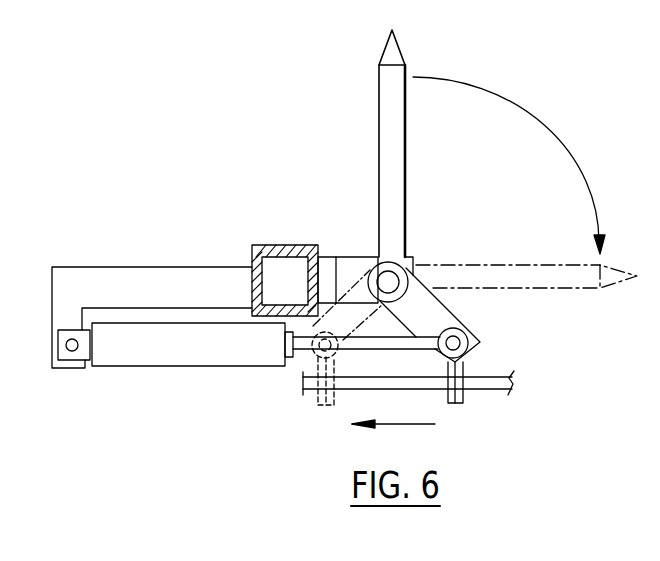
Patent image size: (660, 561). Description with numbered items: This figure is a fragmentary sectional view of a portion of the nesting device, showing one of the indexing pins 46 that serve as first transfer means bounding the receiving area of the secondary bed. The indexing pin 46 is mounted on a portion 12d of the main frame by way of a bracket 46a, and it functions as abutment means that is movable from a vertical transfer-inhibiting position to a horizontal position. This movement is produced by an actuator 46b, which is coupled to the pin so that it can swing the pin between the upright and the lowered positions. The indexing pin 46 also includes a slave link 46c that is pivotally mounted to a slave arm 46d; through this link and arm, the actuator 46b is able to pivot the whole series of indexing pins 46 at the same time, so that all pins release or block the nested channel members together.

The portion of the main frame 12d is at (283, 245).
The indexing pin 46 is at (388, 109).
The bracket 46a is at (345, 257).
The actuator 46b is at (217, 347).
The slave link 46c is at (485, 384).
The slave arm 46d is at (430, 315).